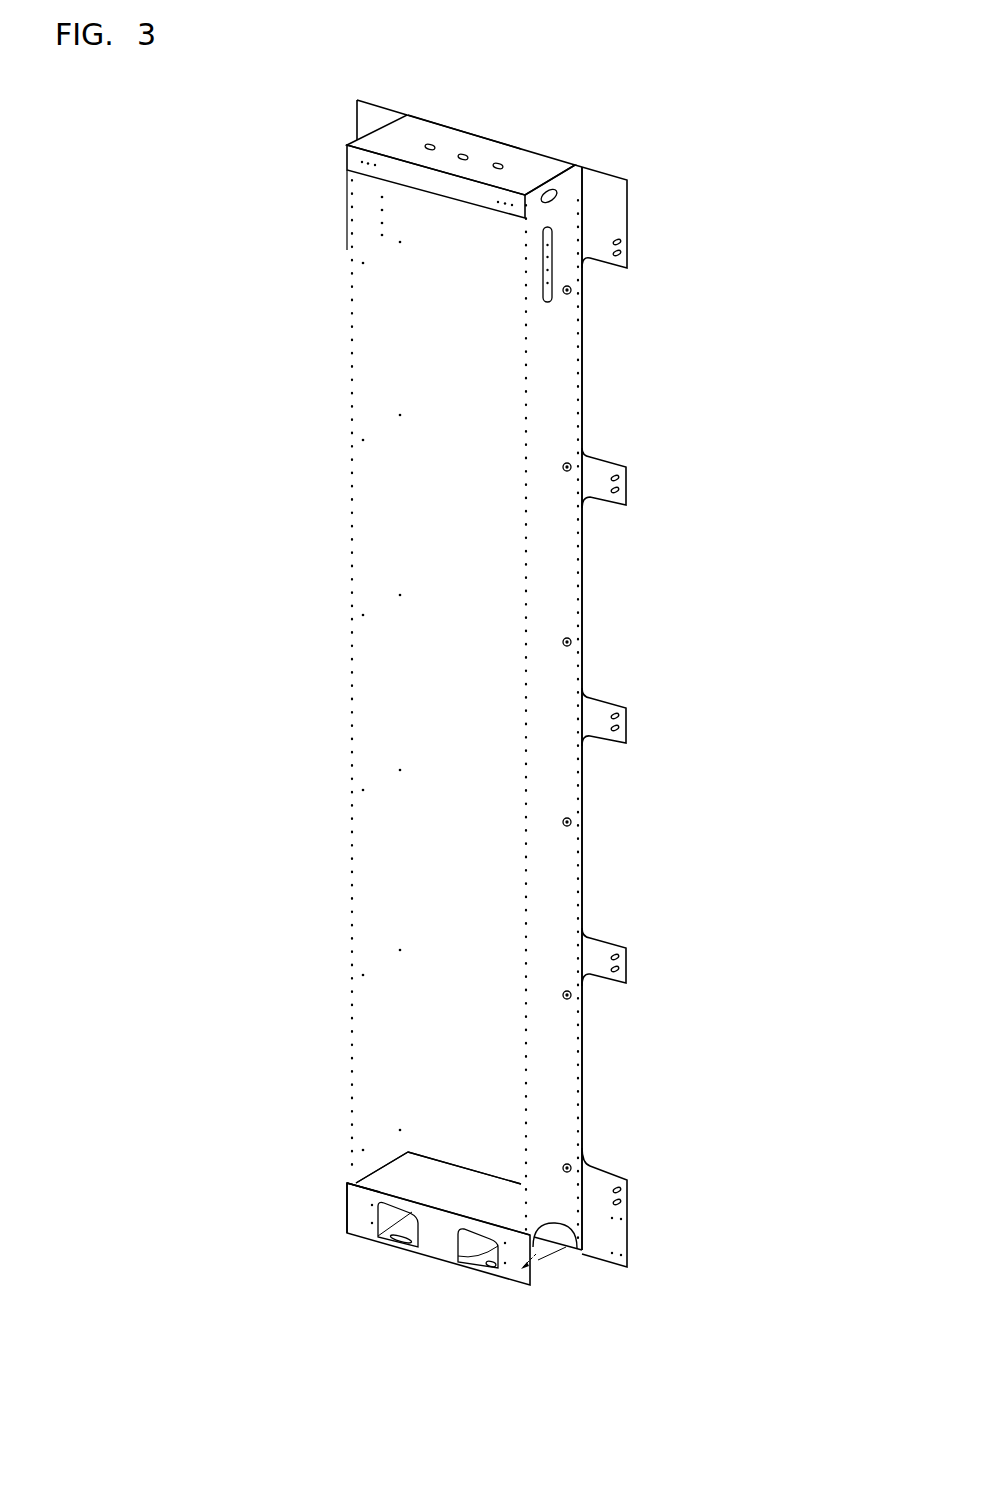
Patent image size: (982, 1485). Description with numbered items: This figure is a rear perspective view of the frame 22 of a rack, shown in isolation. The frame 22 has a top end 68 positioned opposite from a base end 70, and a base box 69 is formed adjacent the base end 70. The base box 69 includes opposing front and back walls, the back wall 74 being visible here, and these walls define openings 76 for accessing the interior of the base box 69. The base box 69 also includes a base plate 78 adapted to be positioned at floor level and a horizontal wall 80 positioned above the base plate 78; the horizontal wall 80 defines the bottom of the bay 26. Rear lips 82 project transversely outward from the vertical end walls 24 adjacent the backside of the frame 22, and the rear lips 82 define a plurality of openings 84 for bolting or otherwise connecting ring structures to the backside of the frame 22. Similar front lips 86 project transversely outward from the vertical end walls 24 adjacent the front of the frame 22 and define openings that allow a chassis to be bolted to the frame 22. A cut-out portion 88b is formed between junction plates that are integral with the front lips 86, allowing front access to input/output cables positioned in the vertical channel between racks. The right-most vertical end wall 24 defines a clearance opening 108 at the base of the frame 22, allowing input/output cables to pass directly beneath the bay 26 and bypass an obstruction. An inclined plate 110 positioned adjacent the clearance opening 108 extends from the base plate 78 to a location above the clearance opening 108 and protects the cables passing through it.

The frame 22 is at (642, 158).
The vertical end wall 24 is at (555, 432).
The bay 26 is at (468, 987).
The top end 68 is at (468, 145).
The base box 69 is at (340, 1207).
The base end 70 is at (353, 1233).
The back wall 74 is at (437, 1245).
The opening 76 is at (495, 1270).
The base plate 78 is at (402, 1245).
The horizontal wall 80 is at (423, 1170).
The rear lip 82 is at (530, 855).
The opening 84 is at (528, 738).
The front lip 86 is at (583, 595).
The cut-out portion 88b is at (590, 693).
The clearance opening 108 is at (550, 1227).
The inclined plate 110 is at (547, 1243).